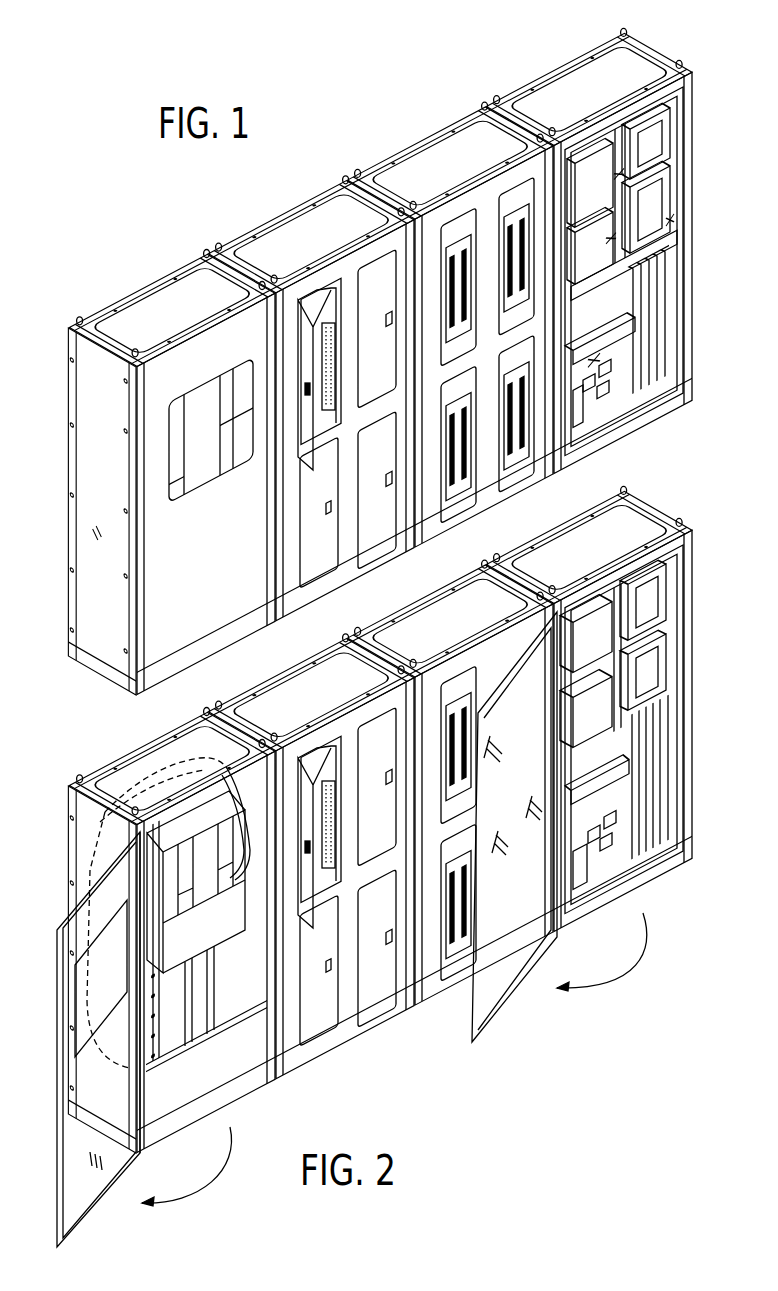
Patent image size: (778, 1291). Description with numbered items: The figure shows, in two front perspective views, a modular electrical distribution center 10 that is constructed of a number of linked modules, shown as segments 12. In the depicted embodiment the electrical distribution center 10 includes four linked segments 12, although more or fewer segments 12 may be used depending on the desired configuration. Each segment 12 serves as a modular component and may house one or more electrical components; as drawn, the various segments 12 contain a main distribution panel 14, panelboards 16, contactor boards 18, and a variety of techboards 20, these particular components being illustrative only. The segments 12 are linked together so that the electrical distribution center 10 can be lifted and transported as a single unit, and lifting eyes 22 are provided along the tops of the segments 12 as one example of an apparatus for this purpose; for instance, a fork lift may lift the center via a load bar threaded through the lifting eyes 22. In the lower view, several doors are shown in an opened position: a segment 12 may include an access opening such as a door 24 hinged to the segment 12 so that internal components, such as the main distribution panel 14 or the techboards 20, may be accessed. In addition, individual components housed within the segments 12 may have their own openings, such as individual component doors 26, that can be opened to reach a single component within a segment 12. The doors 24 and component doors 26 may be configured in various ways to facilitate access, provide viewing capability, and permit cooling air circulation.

In FIG. 1, the electrical distribution center 10 is at (715, 99).
In FIG. 2, the electrical distribution center 10 is at (705, 568).
In FIG. 1, the segment 12 is at (188, 288).
In FIG. 2, the segment 12 is at (258, 707).
In FIG. 1, the main distribution panel 14 is at (205, 472).
In FIG. 2, the main distribution panel 14 is at (223, 930).
In FIG. 1, the panelboard 16 is at (330, 425).
In FIG. 1, the contactor board 18 is at (453, 331).
In FIG. 1, the techboard 20 is at (658, 365).
In FIG. 1, the lifting eye 22 is at (134, 349).
In FIG. 2, the door 24 is at (85, 1085).
In FIG. 2, the component door 26 is at (380, 740).